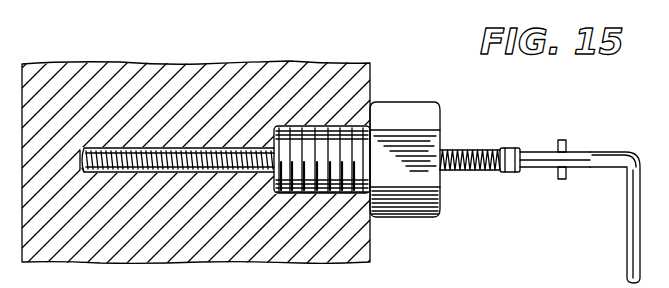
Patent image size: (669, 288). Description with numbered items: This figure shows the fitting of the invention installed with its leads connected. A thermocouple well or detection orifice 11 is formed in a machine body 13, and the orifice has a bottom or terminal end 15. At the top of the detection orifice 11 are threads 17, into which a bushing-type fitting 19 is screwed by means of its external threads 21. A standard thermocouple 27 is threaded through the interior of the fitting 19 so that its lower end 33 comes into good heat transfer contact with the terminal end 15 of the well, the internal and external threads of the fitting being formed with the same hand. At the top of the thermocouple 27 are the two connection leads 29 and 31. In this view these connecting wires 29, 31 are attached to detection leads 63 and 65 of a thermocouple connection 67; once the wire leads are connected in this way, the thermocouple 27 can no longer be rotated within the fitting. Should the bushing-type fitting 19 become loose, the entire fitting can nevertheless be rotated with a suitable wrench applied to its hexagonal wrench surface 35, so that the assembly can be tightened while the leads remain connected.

The thermocouple well or detection orifice 11 is at (195, 146).
The machine body 13 is at (310, 62).
The terminal end 15 is at (82, 150).
The threads 17 is at (330, 126).
The bushing-type fitting 19 is at (405, 100).
The external threads 21 is at (305, 194).
The thermocouple 27 is at (461, 146).
The connection lead 29 is at (545, 152).
The connection lead 31 is at (540, 170).
The lower end 33 is at (83, 173).
The hexagonal wrench surface 35 is at (423, 205).
The detection lead 63 is at (580, 153).
The detection lead 65 is at (566, 180).
The thermocouple connection 67 is at (630, 250).